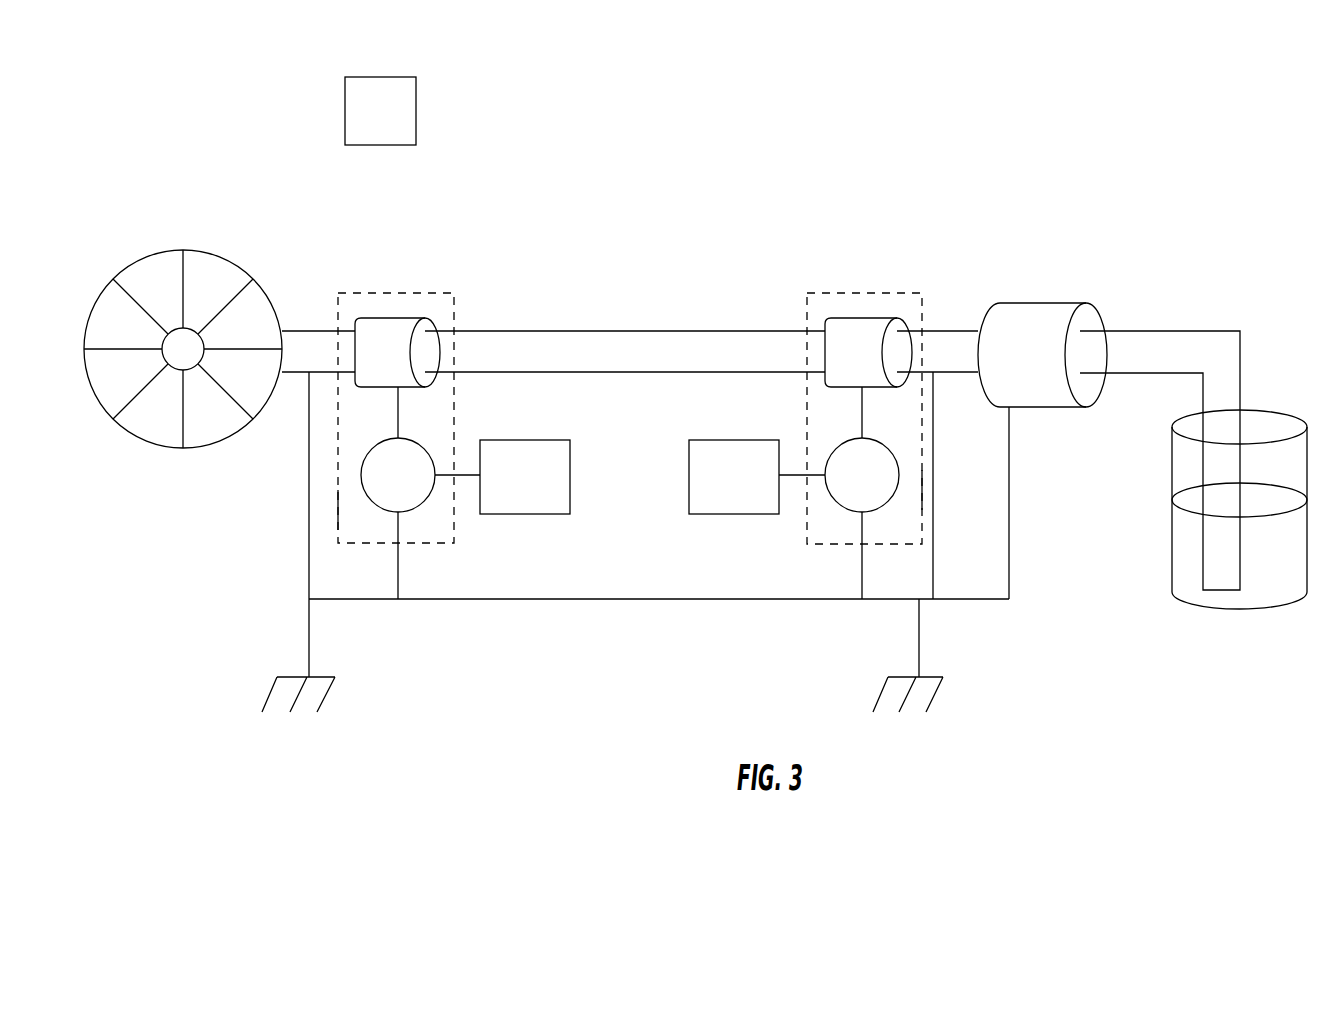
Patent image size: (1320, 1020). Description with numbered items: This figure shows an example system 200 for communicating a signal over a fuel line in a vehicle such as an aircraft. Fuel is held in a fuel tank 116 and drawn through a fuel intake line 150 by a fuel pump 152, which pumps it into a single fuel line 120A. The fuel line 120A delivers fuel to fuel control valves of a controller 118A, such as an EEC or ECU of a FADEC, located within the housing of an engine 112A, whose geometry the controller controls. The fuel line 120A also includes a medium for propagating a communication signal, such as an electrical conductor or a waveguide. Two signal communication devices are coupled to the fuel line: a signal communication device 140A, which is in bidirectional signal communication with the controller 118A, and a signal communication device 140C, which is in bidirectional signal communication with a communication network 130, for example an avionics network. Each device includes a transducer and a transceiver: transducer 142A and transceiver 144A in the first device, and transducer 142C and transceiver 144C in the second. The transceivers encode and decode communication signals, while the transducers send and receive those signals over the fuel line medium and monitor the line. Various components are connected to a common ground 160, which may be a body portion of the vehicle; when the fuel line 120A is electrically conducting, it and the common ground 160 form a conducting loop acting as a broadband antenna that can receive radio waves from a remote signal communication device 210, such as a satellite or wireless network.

The system 200 is at (1193, 177).
The remote signal communication device 210 is at (416, 107).
The engine 112A is at (243, 257).
The fuel line 120A is at (637, 323).
The transducer 142A is at (403, 293).
The transceiver 144A is at (388, 512).
The signal communication device 140A is at (338, 513).
The controller 118A is at (572, 488).
The communication network 130 is at (683, 450).
The transducer 142C is at (880, 303).
The transceiver 144C is at (878, 513).
The signal communication device 140C is at (923, 490).
The fuel pump 152 is at (1040, 290).
The fuel intake line 150 is at (1192, 313).
The fuel tank 116 is at (1282, 613).
The common ground 160 is at (740, 608).